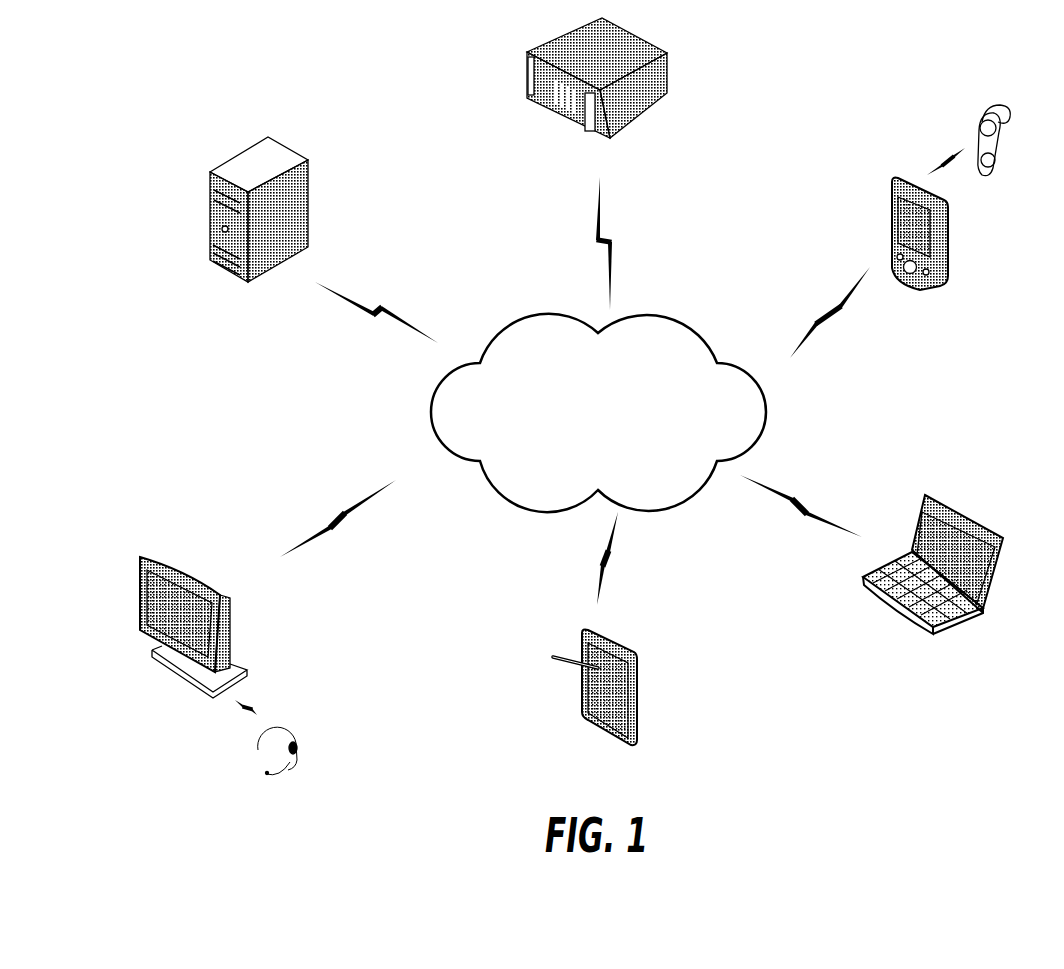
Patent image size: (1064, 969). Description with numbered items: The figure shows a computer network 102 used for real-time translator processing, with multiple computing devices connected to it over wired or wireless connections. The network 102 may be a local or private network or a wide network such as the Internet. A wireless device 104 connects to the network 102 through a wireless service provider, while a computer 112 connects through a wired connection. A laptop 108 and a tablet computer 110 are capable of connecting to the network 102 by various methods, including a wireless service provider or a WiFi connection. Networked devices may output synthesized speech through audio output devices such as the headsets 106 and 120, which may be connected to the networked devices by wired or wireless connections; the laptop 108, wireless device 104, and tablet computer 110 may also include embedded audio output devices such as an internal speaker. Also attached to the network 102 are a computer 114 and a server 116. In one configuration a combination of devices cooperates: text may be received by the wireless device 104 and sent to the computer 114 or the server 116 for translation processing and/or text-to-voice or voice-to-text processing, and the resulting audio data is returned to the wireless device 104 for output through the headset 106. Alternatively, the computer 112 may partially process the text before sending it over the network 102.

The network 102 is at (650, 313).
The wireless device 104 is at (948, 223).
The headset 106 is at (995, 105).
The laptop 108 is at (942, 498).
The tablet computer 110 is at (633, 650).
The computer 112 is at (190, 570).
The computer 114 is at (297, 153).
The server 116 is at (667, 53).
The headset 120 is at (292, 718).